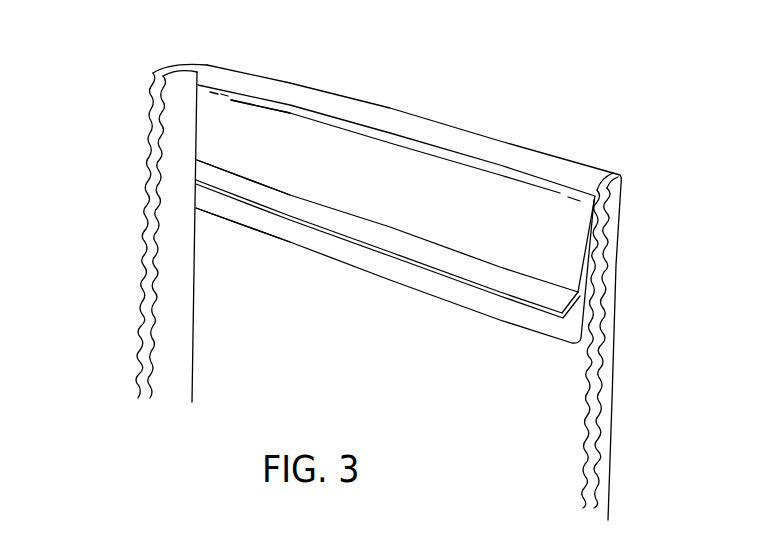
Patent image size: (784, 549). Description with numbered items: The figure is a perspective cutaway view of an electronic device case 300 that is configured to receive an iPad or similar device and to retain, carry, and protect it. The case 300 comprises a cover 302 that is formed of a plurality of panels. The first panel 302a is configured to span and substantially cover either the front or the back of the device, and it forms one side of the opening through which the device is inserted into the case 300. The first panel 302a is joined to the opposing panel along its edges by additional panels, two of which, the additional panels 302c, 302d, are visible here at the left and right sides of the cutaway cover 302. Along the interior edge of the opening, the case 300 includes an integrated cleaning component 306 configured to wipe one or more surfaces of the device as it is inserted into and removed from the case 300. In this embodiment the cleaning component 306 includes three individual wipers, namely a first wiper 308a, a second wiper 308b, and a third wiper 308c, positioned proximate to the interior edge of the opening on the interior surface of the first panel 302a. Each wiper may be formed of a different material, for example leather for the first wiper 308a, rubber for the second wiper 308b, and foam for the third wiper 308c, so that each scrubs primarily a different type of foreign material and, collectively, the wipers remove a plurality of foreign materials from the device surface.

The electronic device case 300 is at (436, 43).
The cover 302 is at (502, 121).
The first panel 302a is at (563, 168).
The additional panel 302c is at (606, 298).
The additional panel 302d is at (164, 226).
The integrated cleaning component 306 is at (446, 332).
The first wiper 308a is at (220, 120).
The second wiper 308b is at (212, 173).
The third wiper 308c is at (210, 200).